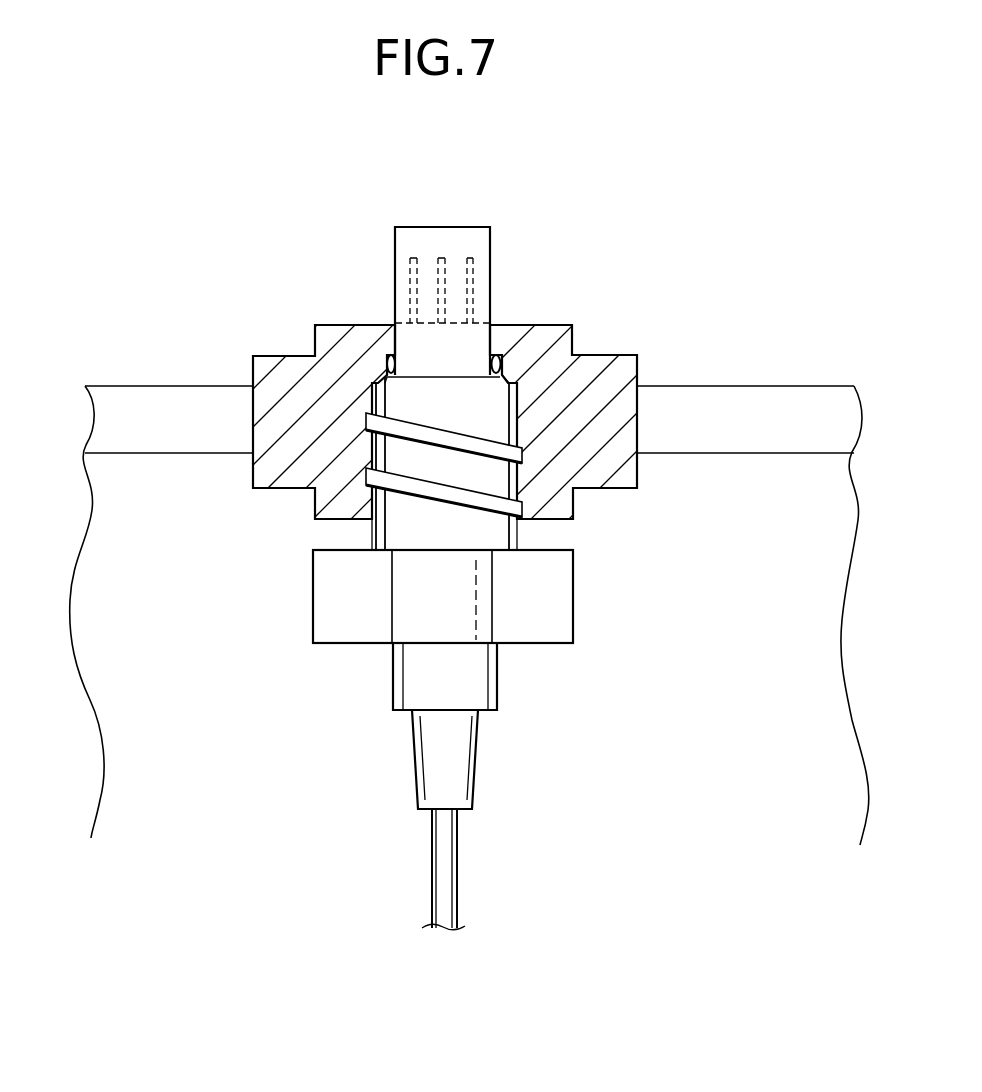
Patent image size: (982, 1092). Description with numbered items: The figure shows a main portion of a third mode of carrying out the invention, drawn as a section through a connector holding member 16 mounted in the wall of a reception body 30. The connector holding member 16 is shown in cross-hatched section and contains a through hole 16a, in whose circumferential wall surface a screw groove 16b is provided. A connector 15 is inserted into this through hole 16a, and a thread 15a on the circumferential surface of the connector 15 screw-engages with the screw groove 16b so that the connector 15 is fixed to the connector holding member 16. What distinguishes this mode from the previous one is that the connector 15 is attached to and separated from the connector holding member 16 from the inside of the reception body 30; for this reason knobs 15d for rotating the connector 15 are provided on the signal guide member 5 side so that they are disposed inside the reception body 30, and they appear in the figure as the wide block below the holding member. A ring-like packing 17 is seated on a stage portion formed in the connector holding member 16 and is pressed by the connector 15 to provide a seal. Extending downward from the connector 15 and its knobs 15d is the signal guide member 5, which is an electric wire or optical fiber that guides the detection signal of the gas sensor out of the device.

The signal guide member 5 is at (460, 868).
The connector 15 is at (496, 415).
The thread 15a is at (523, 458).
The knobs 15d is at (347, 645).
The connector holding member 16 is at (262, 354).
The through hole 16a is at (372, 523).
The screw groove 16b is at (375, 406).
The ring-like packing 17 is at (500, 355).
The reception body 30 is at (772, 384).